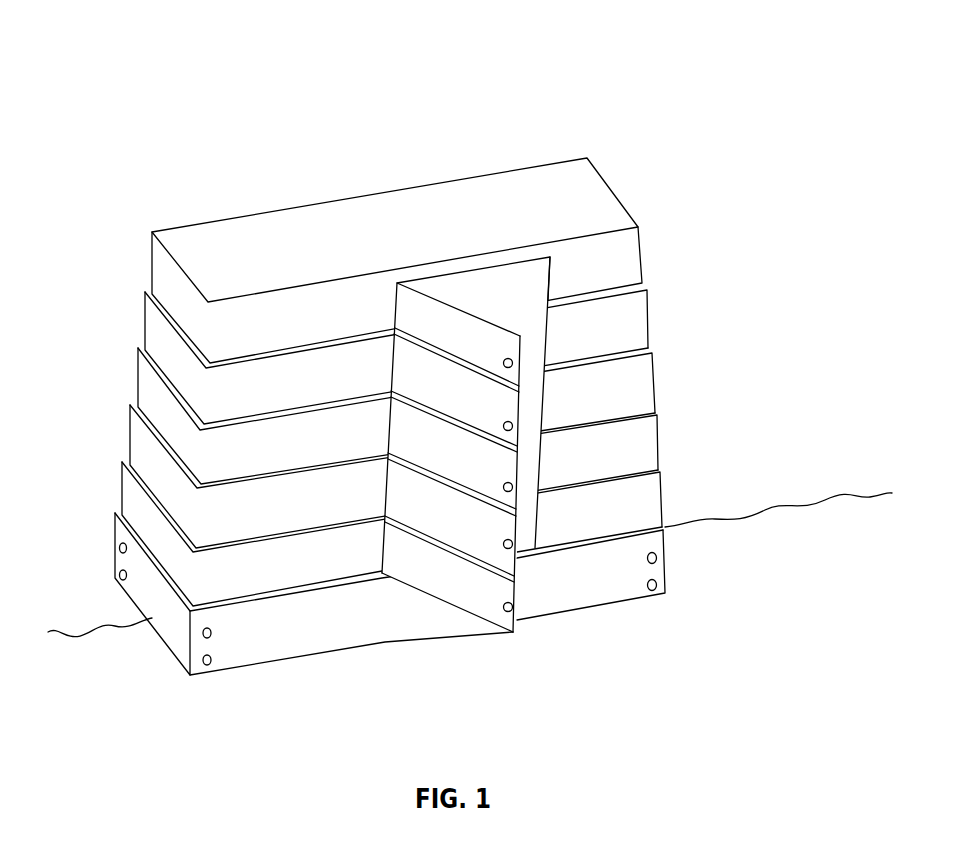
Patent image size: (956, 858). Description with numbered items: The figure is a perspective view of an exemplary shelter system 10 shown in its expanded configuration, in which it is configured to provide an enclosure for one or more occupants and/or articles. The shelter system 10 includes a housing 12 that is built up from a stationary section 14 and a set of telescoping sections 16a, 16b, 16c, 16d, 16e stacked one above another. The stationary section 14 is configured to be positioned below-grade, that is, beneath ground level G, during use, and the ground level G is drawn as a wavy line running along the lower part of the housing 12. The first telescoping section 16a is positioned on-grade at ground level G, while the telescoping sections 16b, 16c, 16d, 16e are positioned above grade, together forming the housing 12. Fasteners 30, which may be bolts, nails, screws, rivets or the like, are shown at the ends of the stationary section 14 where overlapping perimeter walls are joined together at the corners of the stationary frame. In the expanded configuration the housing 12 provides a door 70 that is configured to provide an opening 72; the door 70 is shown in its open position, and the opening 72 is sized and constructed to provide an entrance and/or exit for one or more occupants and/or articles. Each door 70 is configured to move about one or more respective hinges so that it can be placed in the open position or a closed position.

The shelter system 10 is at (607, 42).
The housing 12 is at (605, 173).
The stationary section 14 is at (187, 643).
The first telescoping section 16a is at (663, 510).
The telescoping section 16b is at (657, 432).
The telescoping section 16c is at (655, 380).
The telescoping section 16d is at (648, 320).
The telescoping section 16e is at (439, 256).
The fasteners 30 is at (119, 547).
The door 70 is at (425, 306).
The opening 72 is at (508, 288).
The ground level G is at (789, 512).